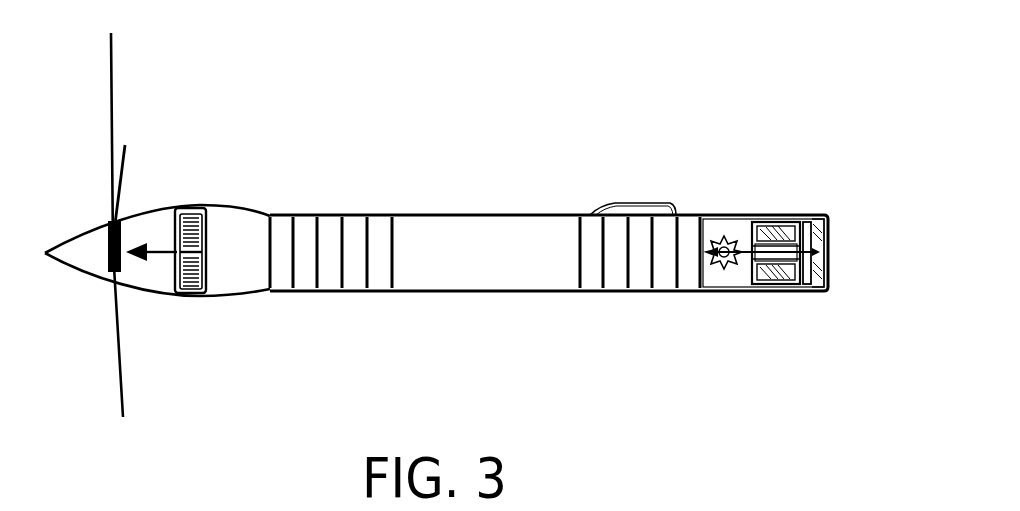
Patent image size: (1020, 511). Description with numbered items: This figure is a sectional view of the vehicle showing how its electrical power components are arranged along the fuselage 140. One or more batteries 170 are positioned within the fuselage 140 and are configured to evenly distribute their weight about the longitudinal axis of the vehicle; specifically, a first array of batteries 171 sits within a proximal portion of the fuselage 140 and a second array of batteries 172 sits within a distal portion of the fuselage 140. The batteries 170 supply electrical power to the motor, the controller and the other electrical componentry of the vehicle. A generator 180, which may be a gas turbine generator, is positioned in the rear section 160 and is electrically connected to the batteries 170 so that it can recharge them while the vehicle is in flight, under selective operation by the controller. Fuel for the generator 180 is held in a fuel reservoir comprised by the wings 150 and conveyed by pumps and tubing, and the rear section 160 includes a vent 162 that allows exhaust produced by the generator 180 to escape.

The fuselage 140 is at (492, 291).
The wings 150 is at (640, 203).
The rear section 160 is at (766, 217).
The vent 162 is at (837, 228).
The batteries 170 is at (485, 219).
The first array of batteries 171 is at (380, 280).
The second array of batteries 172 is at (640, 298).
The generator 180 is at (772, 272).